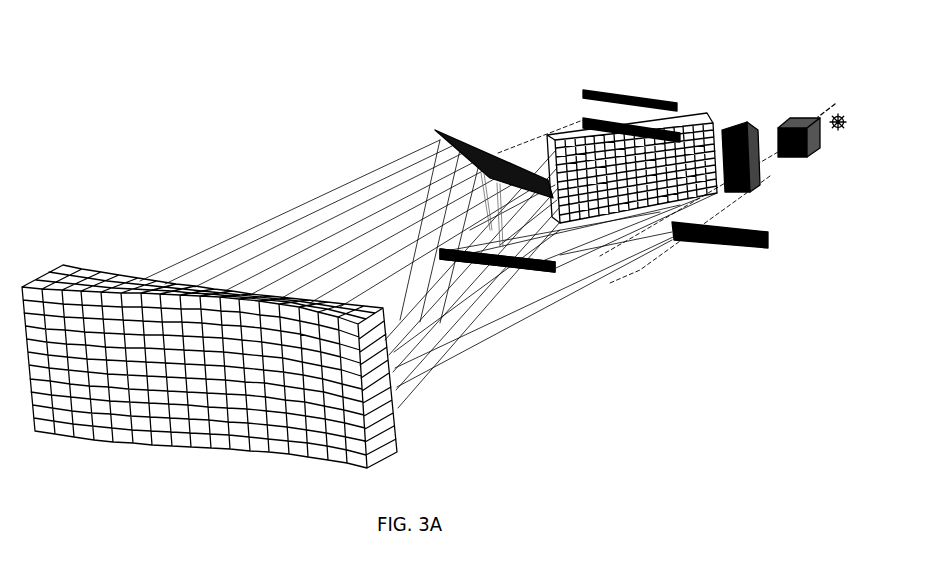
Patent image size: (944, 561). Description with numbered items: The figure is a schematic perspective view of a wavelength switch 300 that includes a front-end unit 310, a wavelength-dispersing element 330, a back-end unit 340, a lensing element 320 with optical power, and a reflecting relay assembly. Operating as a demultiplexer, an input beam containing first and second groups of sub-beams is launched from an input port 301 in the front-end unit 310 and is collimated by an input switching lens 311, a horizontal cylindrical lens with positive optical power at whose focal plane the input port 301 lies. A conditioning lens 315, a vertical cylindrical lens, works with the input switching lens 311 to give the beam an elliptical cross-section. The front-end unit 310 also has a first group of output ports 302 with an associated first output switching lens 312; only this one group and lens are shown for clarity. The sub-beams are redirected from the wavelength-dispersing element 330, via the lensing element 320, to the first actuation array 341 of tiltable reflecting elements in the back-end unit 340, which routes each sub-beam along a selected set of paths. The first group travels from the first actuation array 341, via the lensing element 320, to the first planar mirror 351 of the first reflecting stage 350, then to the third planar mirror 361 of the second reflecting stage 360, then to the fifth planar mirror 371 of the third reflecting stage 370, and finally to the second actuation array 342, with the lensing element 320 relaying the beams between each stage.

The wavelength switch 300 is at (83, 52).
The input port 301 is at (836, 130).
The first group of output ports 302 is at (829, 96).
The front-end unit 310 is at (778, 112).
The input switching lens 311 is at (804, 143).
The first output switching lens 312 is at (783, 127).
The conditioning lens 315 is at (730, 127).
The lensing element 320 is at (202, 450).
The wavelength-dispersing element 330 is at (692, 113).
The back-end unit 340 is at (449, 121).
The first actuation array 341 is at (547, 268).
The second actuation array 342 is at (553, 265).
The first reflecting stage 350 is at (569, 82).
The first planar mirror 351 is at (583, 90).
The second reflecting stage 360 is at (732, 284).
The third planar mirror 361 is at (722, 255).
The third reflecting stage 370 is at (571, 114).
The fifth planar mirror 371 is at (583, 120).